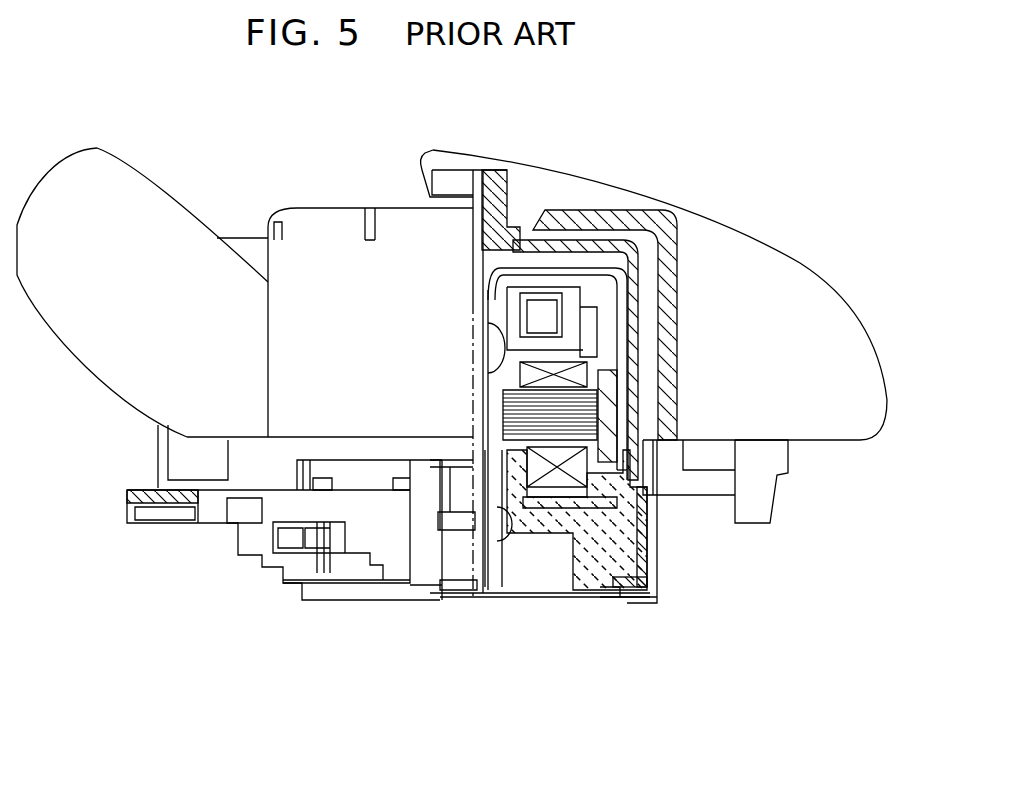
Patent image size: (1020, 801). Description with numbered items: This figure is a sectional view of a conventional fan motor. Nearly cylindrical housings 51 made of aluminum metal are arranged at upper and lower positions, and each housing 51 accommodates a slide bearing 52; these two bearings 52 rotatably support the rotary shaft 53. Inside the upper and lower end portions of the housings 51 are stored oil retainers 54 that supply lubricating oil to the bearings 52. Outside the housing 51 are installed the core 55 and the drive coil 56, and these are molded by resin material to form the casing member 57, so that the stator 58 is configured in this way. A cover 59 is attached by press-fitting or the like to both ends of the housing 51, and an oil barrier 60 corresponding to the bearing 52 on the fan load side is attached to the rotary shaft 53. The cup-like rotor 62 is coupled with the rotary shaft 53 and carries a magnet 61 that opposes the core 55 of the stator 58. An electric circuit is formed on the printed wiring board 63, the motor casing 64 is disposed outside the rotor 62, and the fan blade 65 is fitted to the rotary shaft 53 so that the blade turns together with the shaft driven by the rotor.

The housing 51 is at (598, 316).
The slide bearing 52 is at (512, 213).
The rotary shaft 53 is at (478, 595).
The oil retainer 54 is at (550, 312).
The core 55 is at (645, 500).
The drive coil 56 is at (562, 485).
The casing member 57 is at (612, 577).
The stator 58 is at (332, 600).
The cover 59 is at (512, 300).
The oil barrier 60 is at (495, 312).
The magnet 61 is at (606, 428).
The rotor 62 is at (612, 382).
The printed wiring board 63 is at (648, 540).
The motor casing 64 is at (617, 376).
The fan blade 65 is at (107, 368).